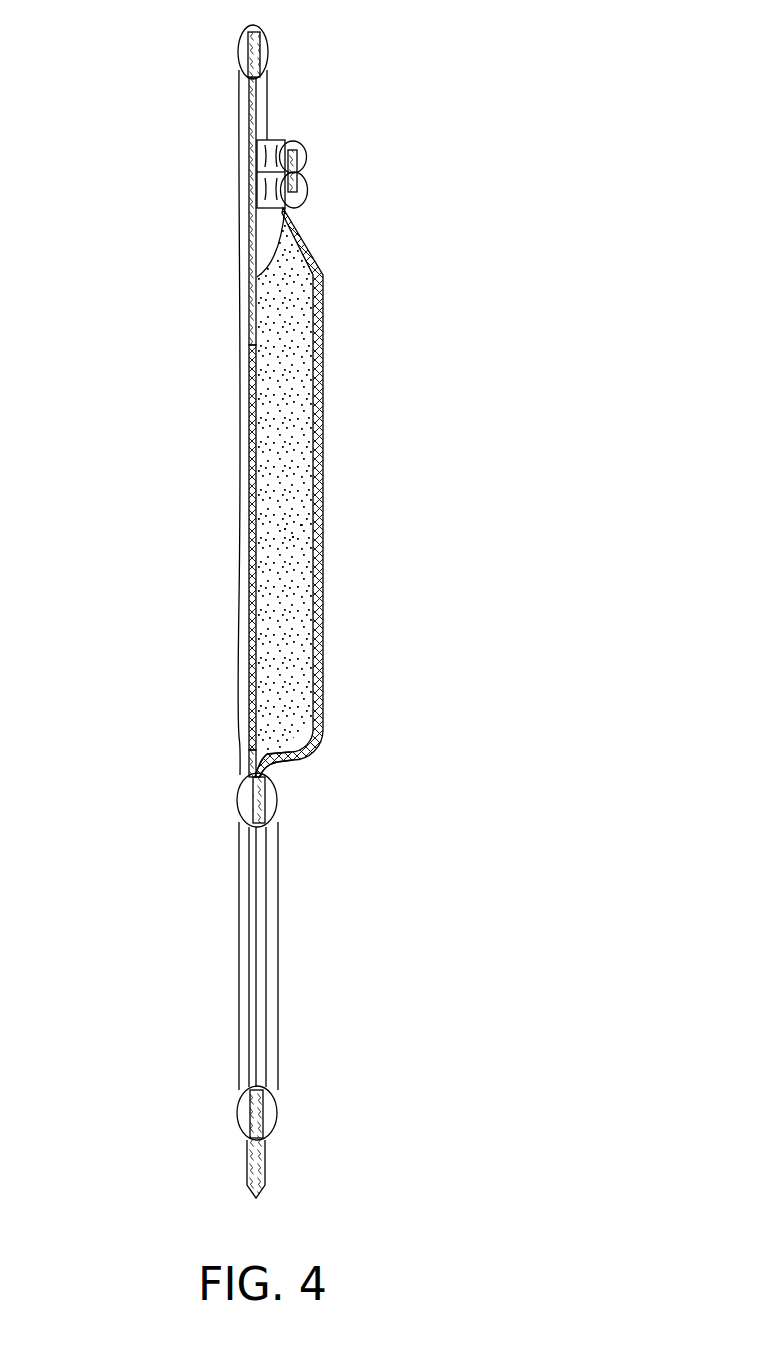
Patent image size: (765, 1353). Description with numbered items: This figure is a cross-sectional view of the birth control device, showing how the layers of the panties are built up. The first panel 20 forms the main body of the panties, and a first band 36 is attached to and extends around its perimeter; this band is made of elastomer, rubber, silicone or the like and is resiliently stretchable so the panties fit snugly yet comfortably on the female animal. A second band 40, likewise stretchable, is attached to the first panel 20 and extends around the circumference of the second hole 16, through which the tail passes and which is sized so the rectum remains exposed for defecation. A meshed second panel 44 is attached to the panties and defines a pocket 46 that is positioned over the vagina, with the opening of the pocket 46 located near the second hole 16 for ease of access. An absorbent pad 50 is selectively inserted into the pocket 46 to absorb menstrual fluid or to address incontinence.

The second hole 16 is at (258, 925).
The first panel 20 is at (250, 395).
The first band 36 is at (265, 47).
The second band 40 is at (275, 798).
The second panel 44 is at (323, 410).
The pocket 46 is at (280, 482).
The pad 50 is at (287, 532).